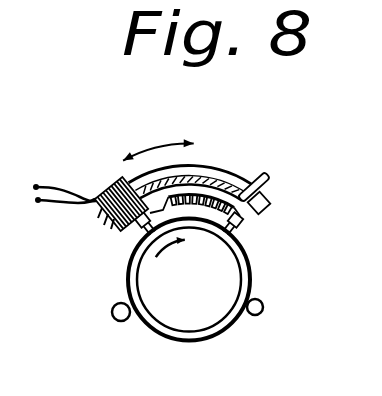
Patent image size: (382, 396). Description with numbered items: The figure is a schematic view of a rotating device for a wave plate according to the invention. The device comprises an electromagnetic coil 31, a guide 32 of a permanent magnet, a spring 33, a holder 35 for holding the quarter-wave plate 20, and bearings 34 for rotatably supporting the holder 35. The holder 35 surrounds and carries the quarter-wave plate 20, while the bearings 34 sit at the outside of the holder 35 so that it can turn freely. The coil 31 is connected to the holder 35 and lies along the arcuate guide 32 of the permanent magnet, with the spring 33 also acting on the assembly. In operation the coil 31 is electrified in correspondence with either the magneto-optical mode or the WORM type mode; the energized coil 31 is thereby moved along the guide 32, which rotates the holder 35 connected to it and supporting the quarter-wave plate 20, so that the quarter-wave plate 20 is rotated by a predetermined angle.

The λ/4 plate 20 is at (166, 305).
The electromagnetic coil 31 is at (108, 187).
The guide of a permanent magnet 32 is at (242, 187).
The spring 33 is at (244, 213).
The bearings 34 is at (112, 313).
The holder 35 is at (249, 266).